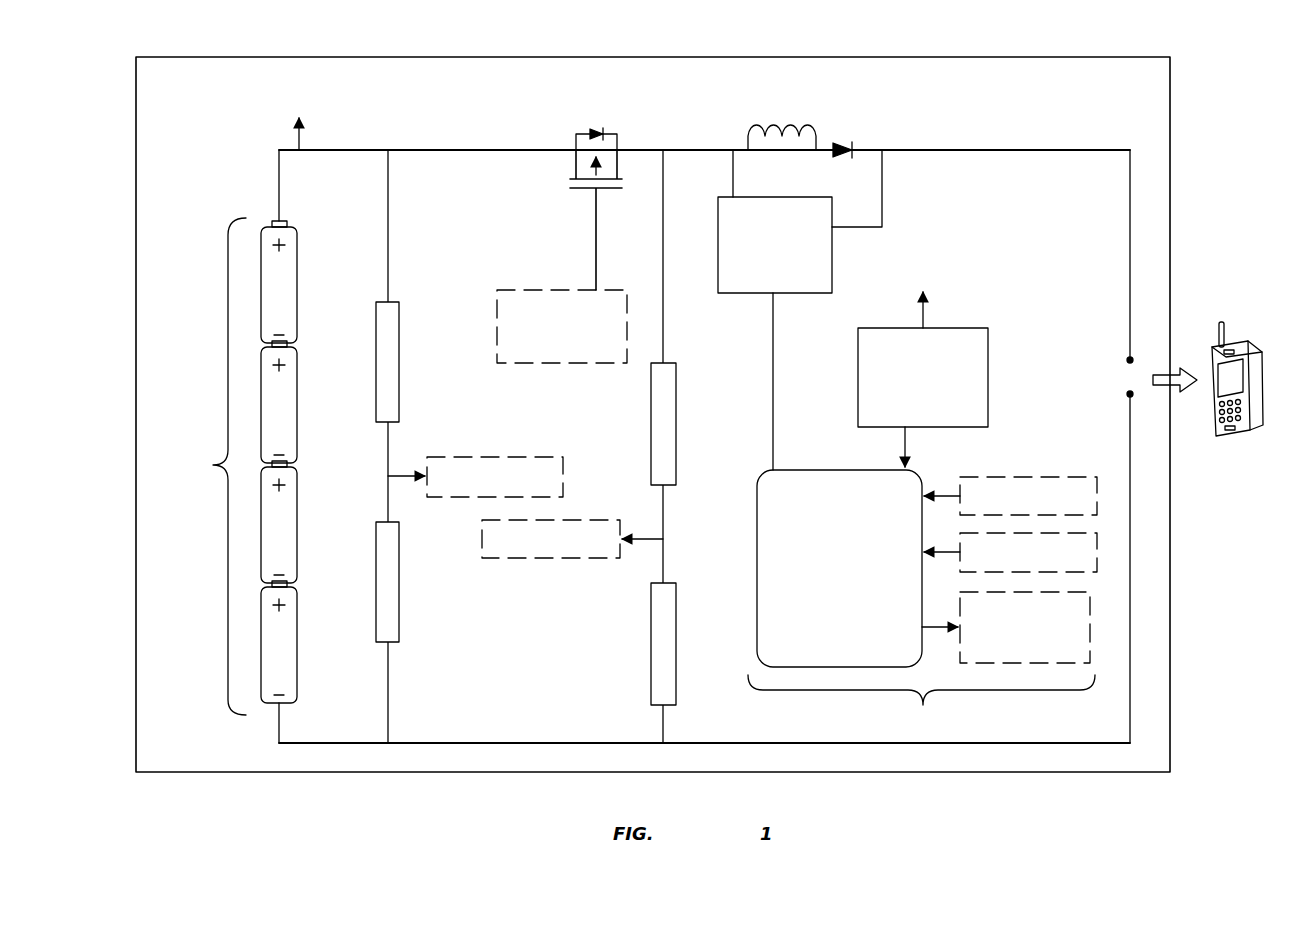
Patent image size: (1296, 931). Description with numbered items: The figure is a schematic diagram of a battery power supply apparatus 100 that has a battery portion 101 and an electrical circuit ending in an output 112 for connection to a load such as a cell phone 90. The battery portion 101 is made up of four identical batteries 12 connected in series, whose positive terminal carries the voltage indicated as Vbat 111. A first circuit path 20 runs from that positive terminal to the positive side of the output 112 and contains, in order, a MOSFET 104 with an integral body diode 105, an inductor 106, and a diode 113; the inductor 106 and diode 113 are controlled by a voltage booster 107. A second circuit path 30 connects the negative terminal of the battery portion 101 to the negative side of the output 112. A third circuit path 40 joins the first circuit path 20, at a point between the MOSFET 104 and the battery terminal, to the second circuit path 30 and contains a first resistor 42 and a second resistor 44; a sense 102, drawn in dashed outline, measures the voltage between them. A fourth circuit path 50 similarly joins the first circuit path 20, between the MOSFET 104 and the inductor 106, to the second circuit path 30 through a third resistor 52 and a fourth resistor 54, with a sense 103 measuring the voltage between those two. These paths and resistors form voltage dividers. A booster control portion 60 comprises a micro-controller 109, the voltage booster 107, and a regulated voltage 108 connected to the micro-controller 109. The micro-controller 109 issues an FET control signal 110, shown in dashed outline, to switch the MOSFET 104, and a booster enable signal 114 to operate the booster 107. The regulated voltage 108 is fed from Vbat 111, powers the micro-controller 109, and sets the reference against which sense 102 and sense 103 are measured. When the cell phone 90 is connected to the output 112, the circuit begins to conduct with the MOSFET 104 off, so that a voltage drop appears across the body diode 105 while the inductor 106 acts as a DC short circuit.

The battery power supply apparatus 100 is at (653, 400).
The first circuit path 20 is at (420, 150).
The second circuit path 30 is at (478, 743).
The Vbat 111 is at (608, 204).
The battery 12 is at (297, 243).
The battery portion 101 is at (196, 466).
The third circuit path 40 is at (388, 246).
The first resistor 42 is at (399, 310).
The second resistor 44 is at (399, 568).
The sense 102 is at (742, 486).
The sense 103 is at (789, 546).
The FET control signal 110 is at (793, 476).
The MOSFET 104 is at (546, 220).
The body diode 105 is at (575, 126).
The fourth circuit path 50 is at (663, 283).
The third resistor 52 is at (676, 410).
The fourth resistor 54 is at (676, 600).
The inductor 106 is at (778, 120).
The diode 113 is at (866, 131).
The voltage booster 107 is at (800, 221).
The booster enable signal 114 is at (772, 381).
The regulated voltage 108 is at (923, 397).
The micro-controller 109 is at (839, 568).
The booster control portion 60 is at (921, 707).
The output 112 is at (1130, 446).
The cell phone 90 is at (1242, 326).